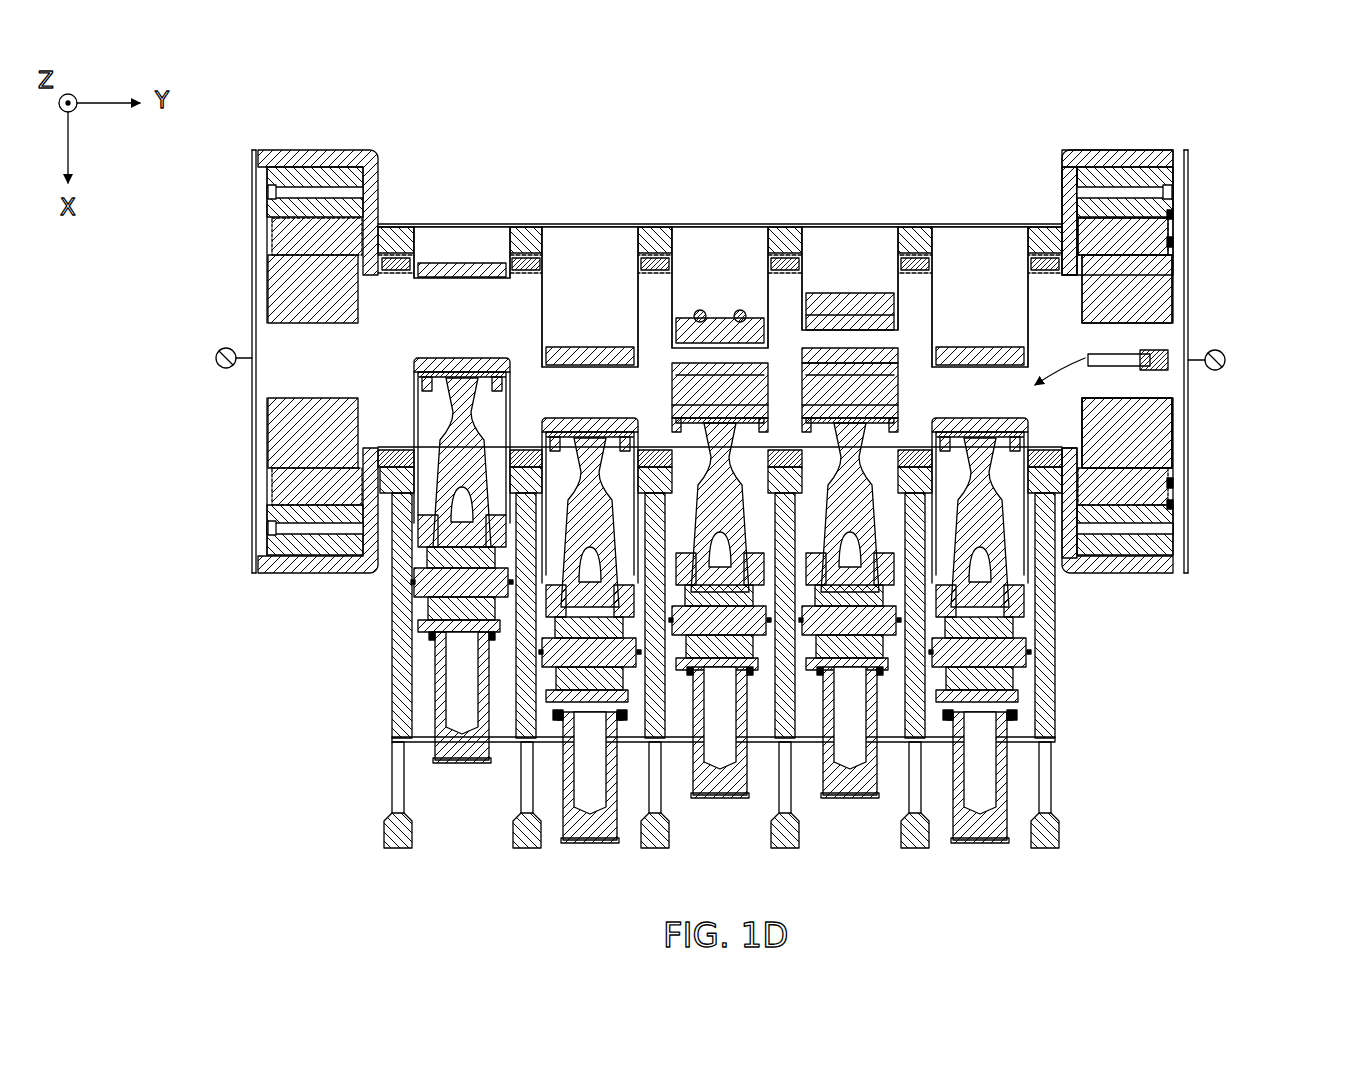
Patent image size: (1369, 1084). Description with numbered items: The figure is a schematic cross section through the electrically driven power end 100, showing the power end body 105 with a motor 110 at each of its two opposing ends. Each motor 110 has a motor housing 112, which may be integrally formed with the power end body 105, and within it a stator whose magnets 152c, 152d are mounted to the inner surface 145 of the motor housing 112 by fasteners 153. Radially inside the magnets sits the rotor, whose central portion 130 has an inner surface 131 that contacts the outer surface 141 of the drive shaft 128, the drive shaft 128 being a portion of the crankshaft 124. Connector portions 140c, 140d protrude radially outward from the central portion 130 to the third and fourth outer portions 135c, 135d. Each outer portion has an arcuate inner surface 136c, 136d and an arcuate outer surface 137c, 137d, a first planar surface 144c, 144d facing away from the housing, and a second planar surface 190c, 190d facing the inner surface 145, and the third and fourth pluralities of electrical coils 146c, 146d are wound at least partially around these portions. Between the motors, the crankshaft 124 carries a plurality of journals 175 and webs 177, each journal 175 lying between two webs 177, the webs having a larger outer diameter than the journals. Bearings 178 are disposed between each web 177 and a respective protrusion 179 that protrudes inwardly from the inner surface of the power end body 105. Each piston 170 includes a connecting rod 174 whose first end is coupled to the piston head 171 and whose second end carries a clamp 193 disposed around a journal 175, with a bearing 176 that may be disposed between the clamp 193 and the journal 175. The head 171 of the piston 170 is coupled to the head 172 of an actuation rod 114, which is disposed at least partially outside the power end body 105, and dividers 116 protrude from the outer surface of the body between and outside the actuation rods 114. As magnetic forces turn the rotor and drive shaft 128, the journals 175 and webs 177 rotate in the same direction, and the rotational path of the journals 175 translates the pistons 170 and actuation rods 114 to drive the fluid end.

The power end 100 is at (1282, 94).
The power end body 105 is at (618, 226).
The motor 110 is at (243, 248).
The motor housing 112 is at (268, 150).
The actuation rod 114 is at (587, 842).
The divider 116 is at (524, 848).
The crankshaft 124 is at (1226, 360).
The drive shaft 128 is at (1152, 335).
The central portion 130 is at (1120, 400).
The inner surface 131 is at (1062, 470).
The third outer portion 135c is at (1160, 410).
The fourth outer portion 135d is at (1128, 240).
The inner surface 136c is at (1075, 475).
The inner surface 136d is at (1068, 245).
The outer surface 137c is at (1150, 545).
The outer surface 137d is at (1130, 300).
The connector portion 140c is at (1150, 445).
The connector portion 140d is at (1150, 265).
The outer surface 141 is at (1150, 395).
The first planar surface 144c is at (1166, 505).
The first planar surface 144d is at (1172, 215).
The inner surface 145 is at (1062, 562).
The third plurality of electrical coils 146c is at (1168, 483).
The fourth plurality of electrical coils 146d is at (1172, 242).
The magnet 152c is at (1076, 565).
The magnet 152d is at (1085, 175).
The fastener 153 is at (1180, 190).
The piston 170 is at (551, 608).
The head 171 is at (547, 652).
The head 172 is at (545, 714).
The connecting rod 174 is at (578, 540).
The journal 175 is at (600, 380).
The bearing 176 is at (575, 345).
The web 177 is at (545, 268).
The bearing 178 is at (482, 256).
The protrusion 179 is at (522, 240).
The second planar surface 190c is at (1105, 555).
The second planar surface 190d is at (1110, 218).
The clamp 193 is at (830, 422).